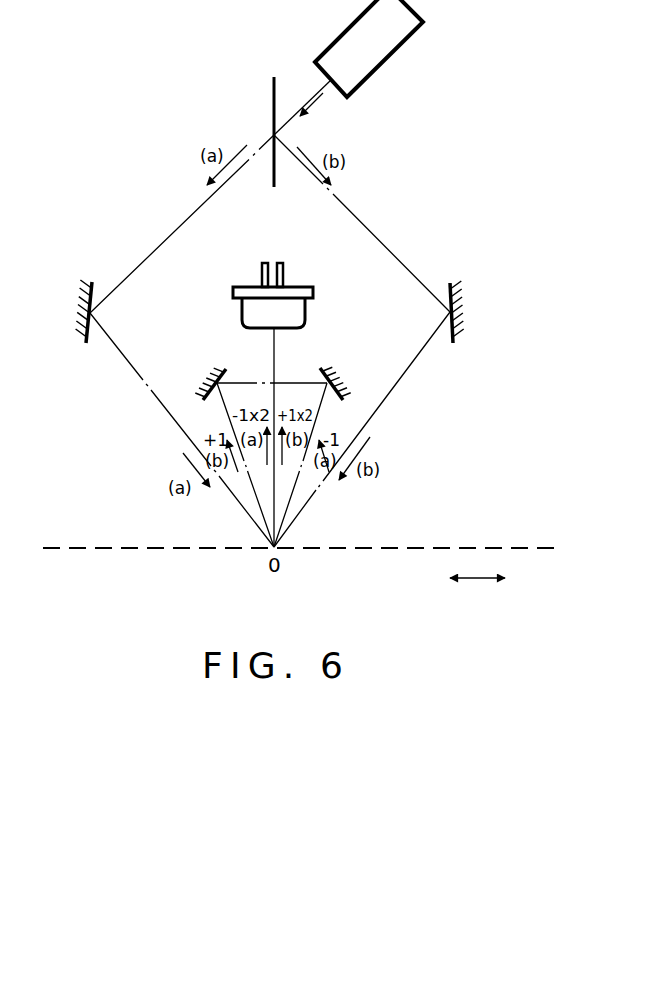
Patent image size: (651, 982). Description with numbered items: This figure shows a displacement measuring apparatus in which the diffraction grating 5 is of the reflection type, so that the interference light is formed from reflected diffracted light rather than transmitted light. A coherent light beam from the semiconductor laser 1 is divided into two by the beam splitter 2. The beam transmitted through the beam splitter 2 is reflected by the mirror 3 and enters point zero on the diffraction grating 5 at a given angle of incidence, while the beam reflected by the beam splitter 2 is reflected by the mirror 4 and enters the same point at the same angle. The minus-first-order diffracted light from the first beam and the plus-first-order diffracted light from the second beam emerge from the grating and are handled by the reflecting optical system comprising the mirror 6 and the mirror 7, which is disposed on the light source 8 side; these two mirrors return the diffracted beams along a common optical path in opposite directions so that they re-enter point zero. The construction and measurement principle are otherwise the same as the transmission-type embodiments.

The laser light source 1 is at (398, 48).
The beam splitter 2 is at (274, 173).
The mirror 3 is at (80, 311).
The mirror 4 is at (460, 318).
The diffraction grating 5 is at (517, 548).
The mirror 6 is at (207, 376).
The mirror 7 is at (345, 378).
The light source 8 is at (306, 316).